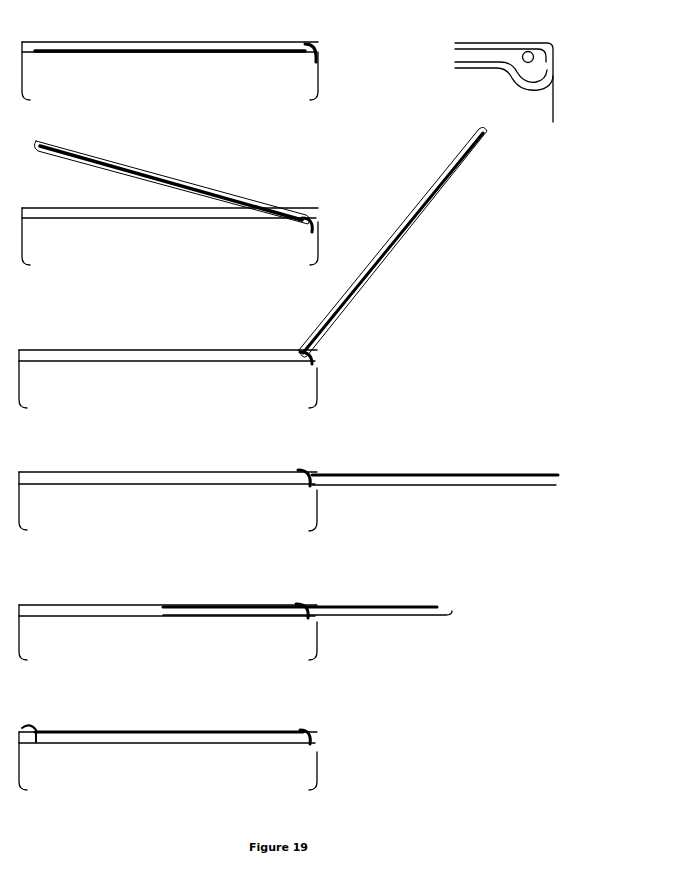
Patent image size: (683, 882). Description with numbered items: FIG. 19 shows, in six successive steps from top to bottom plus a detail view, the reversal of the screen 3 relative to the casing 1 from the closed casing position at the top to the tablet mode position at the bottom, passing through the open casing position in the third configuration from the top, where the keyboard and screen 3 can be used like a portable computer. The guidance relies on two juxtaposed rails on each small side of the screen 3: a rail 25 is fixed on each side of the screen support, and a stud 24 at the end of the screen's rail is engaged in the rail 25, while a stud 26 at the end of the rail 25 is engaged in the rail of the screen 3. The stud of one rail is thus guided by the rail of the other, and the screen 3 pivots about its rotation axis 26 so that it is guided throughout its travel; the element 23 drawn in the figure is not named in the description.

The casing 1 is at (290, 96).
The screen 3 is at (262, 42).
The arm 23 is at (430, 191).
The stud 24 is at (326, 52).
The rail 25 is at (108, 208).
The stud 26 is at (306, 44).